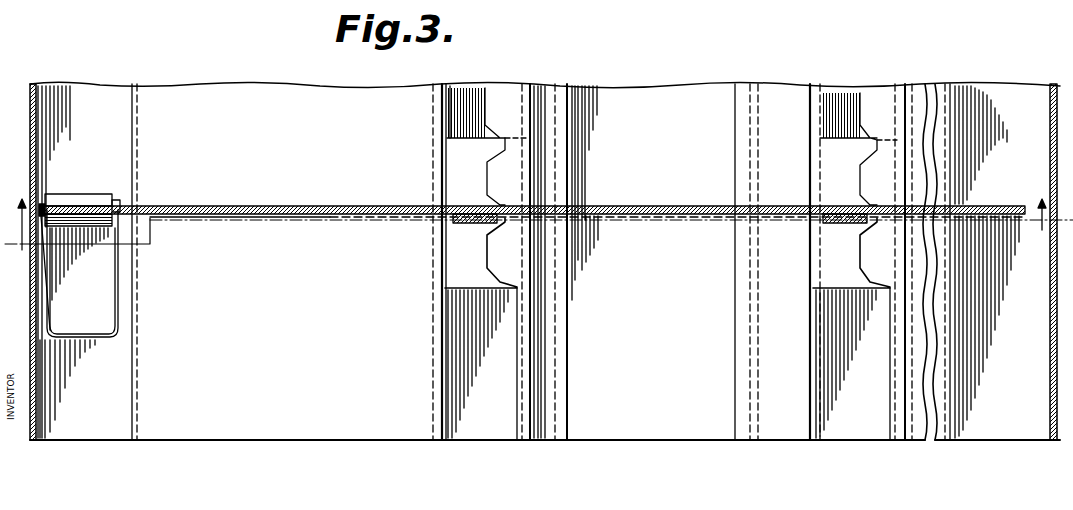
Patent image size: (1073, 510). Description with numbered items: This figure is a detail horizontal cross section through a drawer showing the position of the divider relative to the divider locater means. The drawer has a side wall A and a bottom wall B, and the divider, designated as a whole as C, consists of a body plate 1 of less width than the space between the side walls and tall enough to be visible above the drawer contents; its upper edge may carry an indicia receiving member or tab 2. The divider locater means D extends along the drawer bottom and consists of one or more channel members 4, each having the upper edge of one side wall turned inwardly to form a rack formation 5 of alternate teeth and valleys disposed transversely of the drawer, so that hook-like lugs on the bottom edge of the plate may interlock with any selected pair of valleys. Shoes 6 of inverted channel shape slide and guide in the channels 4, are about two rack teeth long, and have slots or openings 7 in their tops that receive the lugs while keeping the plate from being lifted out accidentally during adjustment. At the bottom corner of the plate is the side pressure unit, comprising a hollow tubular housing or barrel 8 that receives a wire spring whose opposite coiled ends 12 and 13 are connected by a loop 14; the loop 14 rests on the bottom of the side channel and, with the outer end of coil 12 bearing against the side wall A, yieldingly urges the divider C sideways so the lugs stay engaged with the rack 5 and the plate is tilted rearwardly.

The body plate 1 is at (677, 213).
The indicia receiving member or tab 2 is at (539, 228).
The channel member 4 is at (662, 364).
The rack formation 5 is at (498, 115).
The shoe 6 is at (470, 153).
The slot or opening 7 is at (468, 219).
The hollow tubular housing or barrel 8 is at (84, 197).
The coiled end 12 is at (44, 203).
The coiled end 13 is at (122, 198).
The loop 14 is at (118, 263).
The side wall A is at (36, 148).
The bottom wall B is at (120, 129).
The divider C is at (608, 213).
The divider locater means D is at (490, 109).